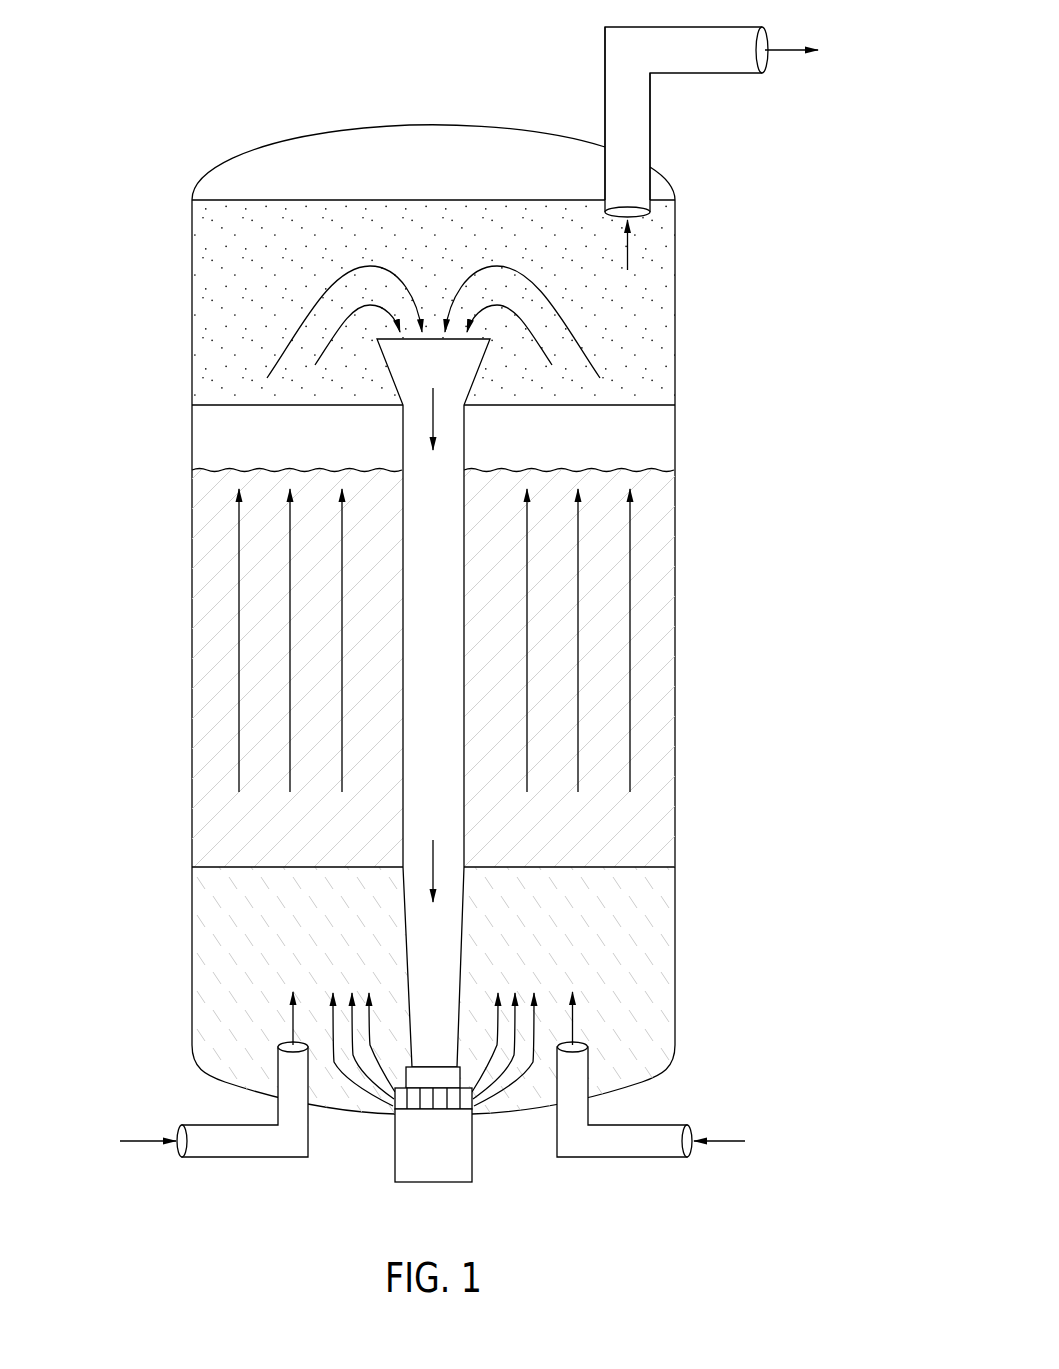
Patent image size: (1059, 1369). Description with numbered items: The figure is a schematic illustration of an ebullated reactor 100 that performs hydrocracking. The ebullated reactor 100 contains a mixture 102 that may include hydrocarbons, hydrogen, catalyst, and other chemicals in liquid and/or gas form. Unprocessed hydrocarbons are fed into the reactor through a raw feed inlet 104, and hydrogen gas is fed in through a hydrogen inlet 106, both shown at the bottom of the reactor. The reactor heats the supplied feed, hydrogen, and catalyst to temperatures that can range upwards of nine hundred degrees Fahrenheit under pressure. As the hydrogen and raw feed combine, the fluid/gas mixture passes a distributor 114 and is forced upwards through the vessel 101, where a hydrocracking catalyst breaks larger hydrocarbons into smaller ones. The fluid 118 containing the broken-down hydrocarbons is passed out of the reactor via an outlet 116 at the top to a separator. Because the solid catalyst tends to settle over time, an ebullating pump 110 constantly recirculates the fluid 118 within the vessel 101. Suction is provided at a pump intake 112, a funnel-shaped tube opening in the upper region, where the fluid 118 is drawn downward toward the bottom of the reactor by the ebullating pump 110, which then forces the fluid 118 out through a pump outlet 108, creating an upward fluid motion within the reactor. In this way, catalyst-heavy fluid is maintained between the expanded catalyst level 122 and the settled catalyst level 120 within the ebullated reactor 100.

The ebullated reactor 100 is at (232, 98).
The vessel 101 is at (675, 435).
The mixture 102 is at (667, 650).
The raw feed inlet 104 is at (243, 1160).
The hydrogen inlet 106 is at (622, 1160).
The pump outlet 108 is at (393, 1104).
The ebullating pump 110 is at (430, 1184).
The pump intake 112 is at (478, 373).
The distributor 114 is at (645, 867).
The outlet 116 is at (650, 118).
The fluid 118 is at (675, 300).
The settled catalyst level 120 is at (600, 469).
The expanded catalyst level 122 is at (553, 407).